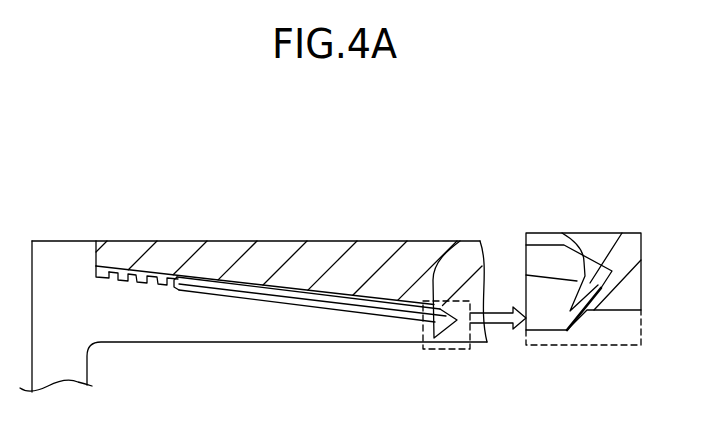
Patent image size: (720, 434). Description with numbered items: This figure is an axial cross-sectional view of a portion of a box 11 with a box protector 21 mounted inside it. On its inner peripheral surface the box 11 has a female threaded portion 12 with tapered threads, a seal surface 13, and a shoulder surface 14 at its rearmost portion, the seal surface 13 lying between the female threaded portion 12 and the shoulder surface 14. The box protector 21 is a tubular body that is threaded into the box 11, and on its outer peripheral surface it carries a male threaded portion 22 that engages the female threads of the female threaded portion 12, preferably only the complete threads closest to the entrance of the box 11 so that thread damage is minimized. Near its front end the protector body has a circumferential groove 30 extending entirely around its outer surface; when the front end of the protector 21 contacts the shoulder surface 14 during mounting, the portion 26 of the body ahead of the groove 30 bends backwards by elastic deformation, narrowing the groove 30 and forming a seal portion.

The box 11 is at (345, 252).
The female threaded portion 12 is at (227, 272).
The seal surface 13 is at (611, 242).
The shoulder surface 14 is at (604, 288).
The box protector 21 is at (294, 336).
The male threaded portion 22 is at (138, 296).
The portion of the protector body ahead of the groove 26 is at (609, 270).
The circumferential groove 30 is at (450, 241).